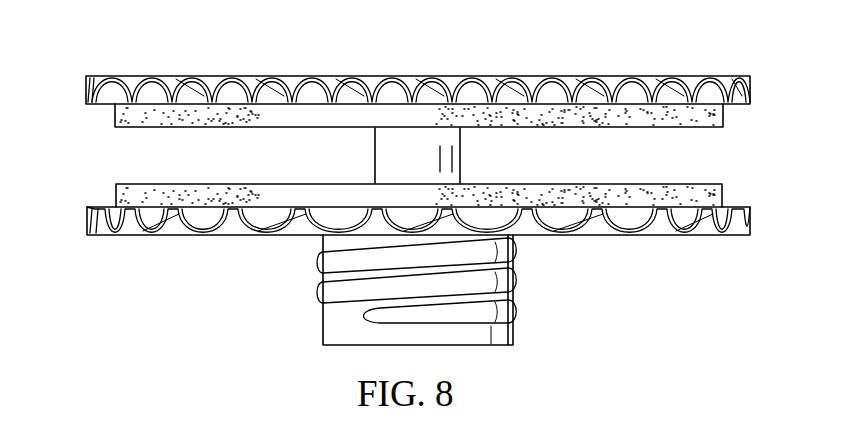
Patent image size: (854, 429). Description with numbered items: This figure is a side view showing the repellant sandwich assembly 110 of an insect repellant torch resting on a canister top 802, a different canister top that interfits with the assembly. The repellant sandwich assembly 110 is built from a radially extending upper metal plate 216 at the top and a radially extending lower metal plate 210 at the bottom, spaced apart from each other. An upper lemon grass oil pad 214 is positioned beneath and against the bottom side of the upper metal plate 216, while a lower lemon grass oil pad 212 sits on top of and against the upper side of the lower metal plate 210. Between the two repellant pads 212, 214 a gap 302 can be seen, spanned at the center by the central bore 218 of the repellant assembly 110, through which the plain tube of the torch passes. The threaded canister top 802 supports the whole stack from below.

The repellant sandwich assembly 110 is at (504, 61).
The upper metal plate 216 is at (648, 77).
The upper lemon grass oil pad 214 is at (723, 116).
The central bore 218 is at (463, 155).
The gap 302 is at (124, 162).
The lower lemon grass oil pad 212 is at (722, 197).
The lower metal plate 210 is at (690, 233).
The canister top 802 is at (318, 293).